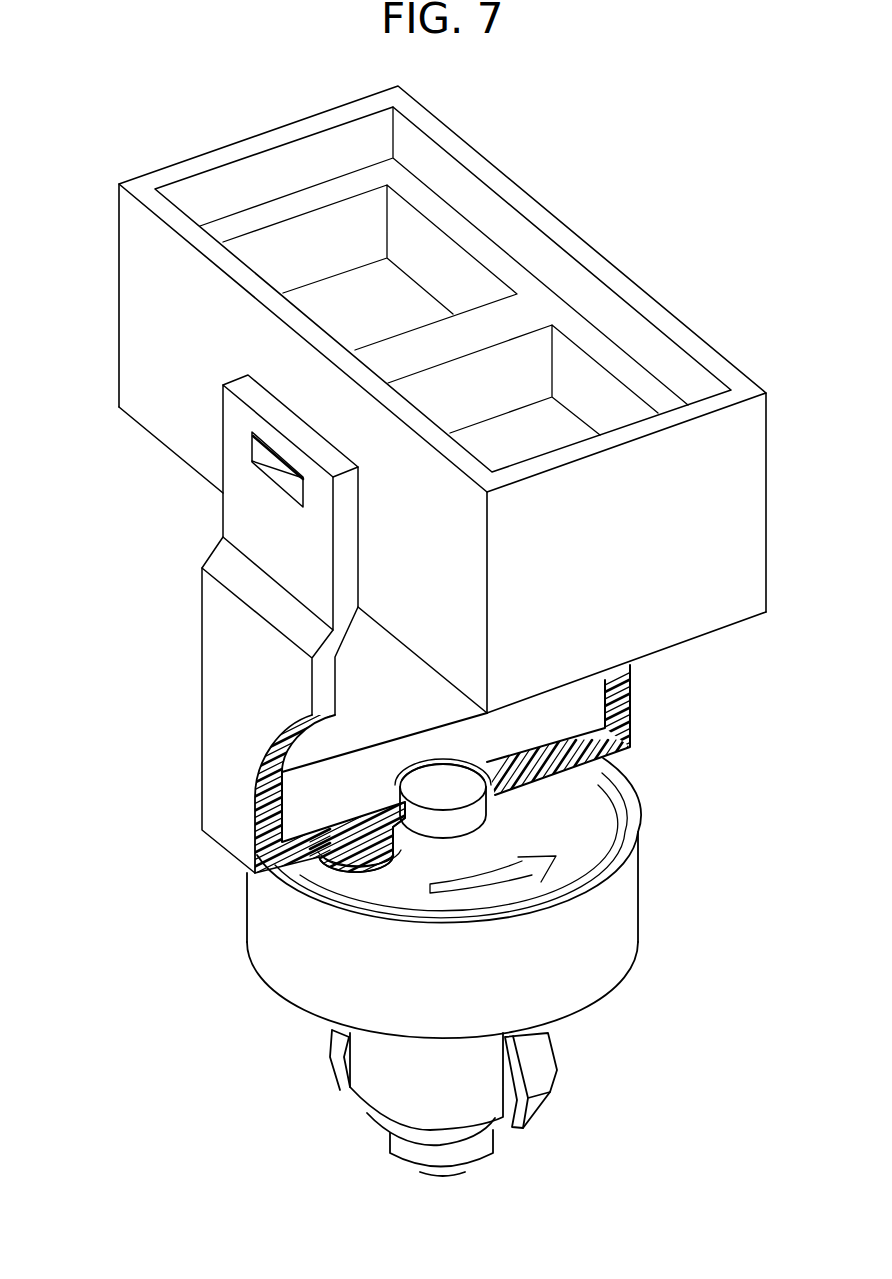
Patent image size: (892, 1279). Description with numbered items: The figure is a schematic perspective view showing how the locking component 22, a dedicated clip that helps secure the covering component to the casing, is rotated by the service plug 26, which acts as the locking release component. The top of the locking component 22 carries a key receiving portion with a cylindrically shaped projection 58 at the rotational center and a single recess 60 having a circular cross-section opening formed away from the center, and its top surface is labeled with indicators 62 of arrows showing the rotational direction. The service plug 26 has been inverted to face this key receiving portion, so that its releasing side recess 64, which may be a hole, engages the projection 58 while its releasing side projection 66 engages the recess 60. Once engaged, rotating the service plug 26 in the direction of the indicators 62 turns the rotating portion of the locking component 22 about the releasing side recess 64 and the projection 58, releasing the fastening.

The locking component 22 is at (638, 793).
The service plug 26 is at (186, 601).
The projection 58 is at (470, 828).
The recess 60 is at (374, 856).
The indicators 62 is at (536, 858).
The releasing side recess 64 is at (443, 763).
The releasing side projection 66 is at (358, 858).